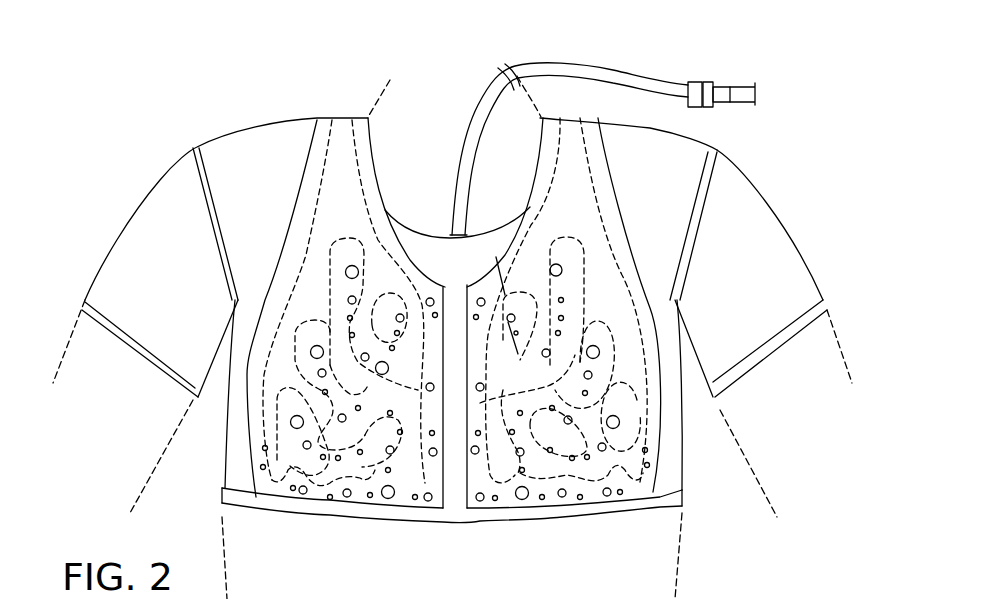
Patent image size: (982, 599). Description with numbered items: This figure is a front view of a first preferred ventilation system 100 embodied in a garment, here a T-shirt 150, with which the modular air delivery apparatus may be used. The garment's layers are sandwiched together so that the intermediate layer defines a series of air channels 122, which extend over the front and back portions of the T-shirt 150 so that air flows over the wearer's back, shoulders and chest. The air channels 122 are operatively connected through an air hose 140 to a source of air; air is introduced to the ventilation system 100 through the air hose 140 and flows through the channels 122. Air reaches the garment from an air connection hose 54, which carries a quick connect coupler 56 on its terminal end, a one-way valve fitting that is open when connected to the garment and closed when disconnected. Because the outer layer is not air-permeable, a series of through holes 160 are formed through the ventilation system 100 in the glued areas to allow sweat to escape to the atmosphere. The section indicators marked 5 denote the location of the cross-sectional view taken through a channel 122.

The ventilation system 100 is at (452, 308).
The air channels 122 is at (573, 182).
The air hose 140 is at (657, 78).
The T-shirt 150 is at (755, 235).
The through holes 160 is at (345, 272).
The section line 5 is at (518, 265).
The air connection hose 54 is at (742, 85).
The quick connect coupler 56 is at (709, 62).